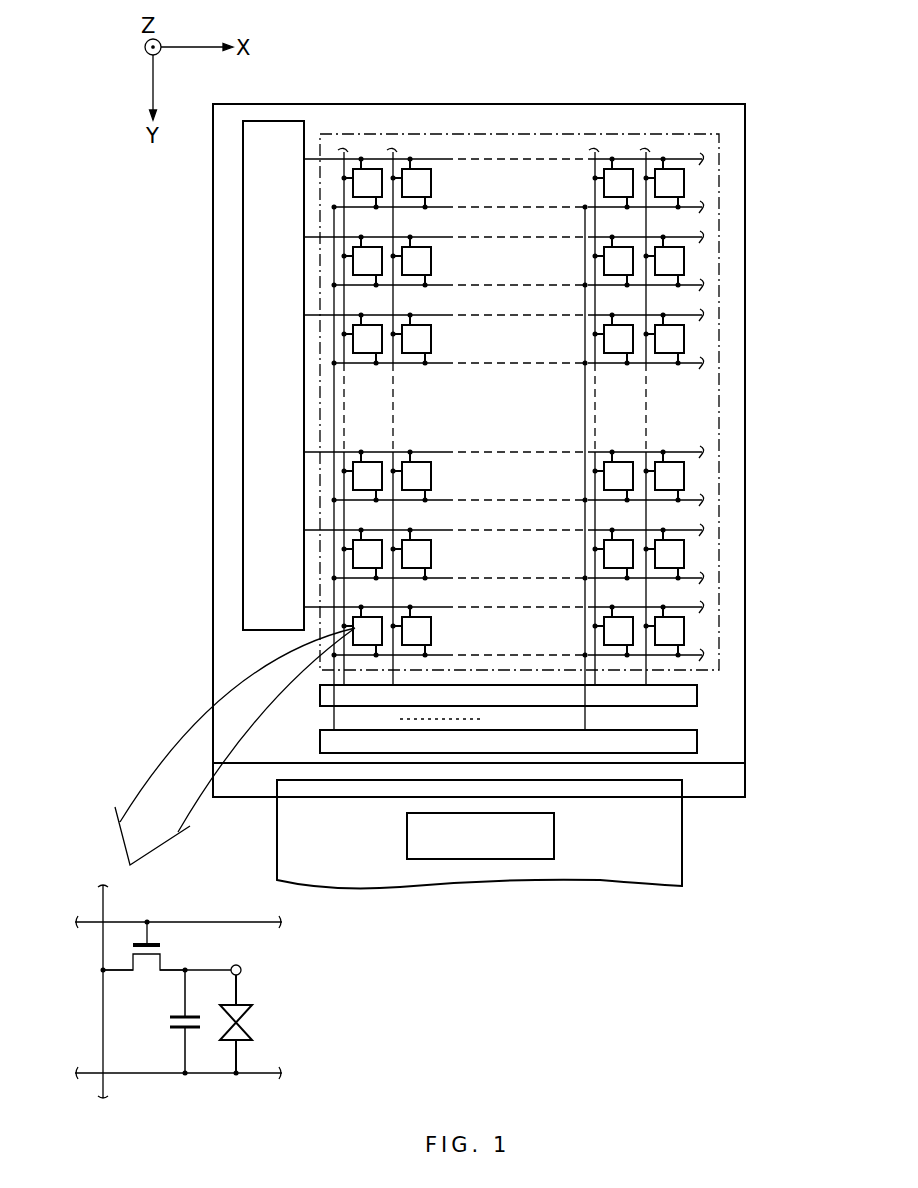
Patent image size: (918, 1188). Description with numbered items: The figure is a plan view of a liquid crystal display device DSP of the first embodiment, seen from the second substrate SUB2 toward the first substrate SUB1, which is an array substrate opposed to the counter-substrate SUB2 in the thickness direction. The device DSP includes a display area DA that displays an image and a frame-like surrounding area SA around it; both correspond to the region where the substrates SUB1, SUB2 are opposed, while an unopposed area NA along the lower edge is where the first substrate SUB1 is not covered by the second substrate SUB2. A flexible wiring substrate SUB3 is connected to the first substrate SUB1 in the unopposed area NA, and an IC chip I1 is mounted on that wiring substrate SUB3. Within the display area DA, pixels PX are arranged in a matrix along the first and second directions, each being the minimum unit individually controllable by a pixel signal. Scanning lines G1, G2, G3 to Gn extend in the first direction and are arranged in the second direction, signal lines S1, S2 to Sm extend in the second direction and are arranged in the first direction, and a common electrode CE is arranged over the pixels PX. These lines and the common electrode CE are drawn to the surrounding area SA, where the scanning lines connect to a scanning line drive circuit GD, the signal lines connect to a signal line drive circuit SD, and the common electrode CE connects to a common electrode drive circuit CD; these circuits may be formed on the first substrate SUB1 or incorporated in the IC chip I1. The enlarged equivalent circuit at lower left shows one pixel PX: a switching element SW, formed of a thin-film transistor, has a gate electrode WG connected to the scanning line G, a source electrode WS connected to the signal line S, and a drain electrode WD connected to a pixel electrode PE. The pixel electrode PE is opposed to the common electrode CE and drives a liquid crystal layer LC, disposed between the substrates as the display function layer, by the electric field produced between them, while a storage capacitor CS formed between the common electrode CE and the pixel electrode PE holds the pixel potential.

The liquid crystal display device DSP is at (731, 76).
The first substrate SUB1 is at (748, 792).
The second substrate SUB2 is at (745, 520).
The wiring substrate SUB3 is at (682, 845).
The unopposed area NA is at (725, 781).
The display area DA is at (502, 153).
The surrounding area SA is at (585, 128).
The scanning line drive circuit GD is at (275, 121).
The signal line drive circuit SD is at (697, 687).
The common electrode drive circuit CD is at (697, 737).
The IC chip I1 is at (500, 860).
The scanning line G1 is at (702, 162).
The scanning line G2 is at (702, 240).
The scanning line G3 is at (702, 318).
The scanning line Gn is at (702, 610).
The signal line S1 is at (344, 152).
The signal line S2 is at (393, 152).
The signal line Sm is at (646, 152).
The pixel PX is at (432, 183).
The common electrode CE is at (334, 384).
The scanning line G is at (90, 922).
The signal line S is at (103, 1018).
The switching element SW is at (170, 958).
The gate electrode WG is at (150, 934).
The source electrode WS is at (118, 968).
The drain electrode WD is at (172, 973).
The pixel electrode PE is at (241, 970).
The storage capacitor CS is at (168, 1023).
The liquid crystal layer LC is at (253, 1022).